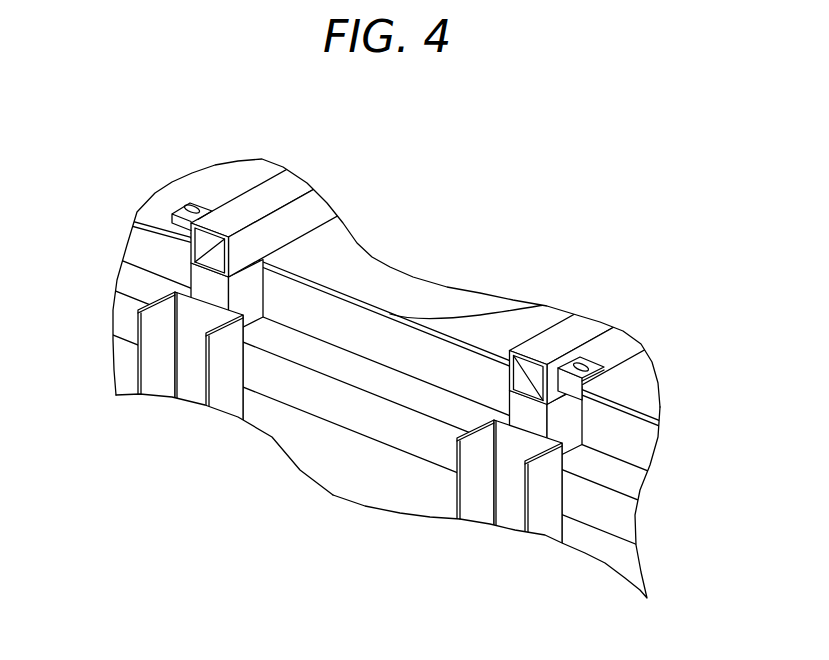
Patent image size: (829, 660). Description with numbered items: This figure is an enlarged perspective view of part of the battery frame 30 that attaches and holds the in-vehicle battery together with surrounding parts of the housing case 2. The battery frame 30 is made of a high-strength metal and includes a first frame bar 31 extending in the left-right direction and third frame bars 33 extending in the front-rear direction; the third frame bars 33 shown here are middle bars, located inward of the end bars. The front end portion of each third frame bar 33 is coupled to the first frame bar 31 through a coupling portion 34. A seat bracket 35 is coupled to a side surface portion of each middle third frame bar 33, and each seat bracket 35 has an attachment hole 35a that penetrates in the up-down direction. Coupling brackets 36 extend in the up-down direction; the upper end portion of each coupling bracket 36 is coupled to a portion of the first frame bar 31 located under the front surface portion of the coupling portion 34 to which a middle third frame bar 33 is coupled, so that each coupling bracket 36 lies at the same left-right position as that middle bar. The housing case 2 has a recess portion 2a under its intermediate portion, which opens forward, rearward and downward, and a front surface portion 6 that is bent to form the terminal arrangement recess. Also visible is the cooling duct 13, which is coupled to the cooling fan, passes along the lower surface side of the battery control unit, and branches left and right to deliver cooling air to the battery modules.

The housing case 2 is at (313, 414).
The recess portion 2a is at (257, 418).
The front surface portion 6 is at (602, 545).
The cooling duct 13 is at (413, 295).
The battery frame 30 is at (387, 422).
The first frame bar 31 is at (357, 420).
The third frame bar 33 is at (296, 188).
The coupling portion 34 is at (206, 283).
The seat bracket 35 is at (180, 205).
The attachment hole 35a is at (196, 204).
The coupling bracket 36 is at (160, 372).